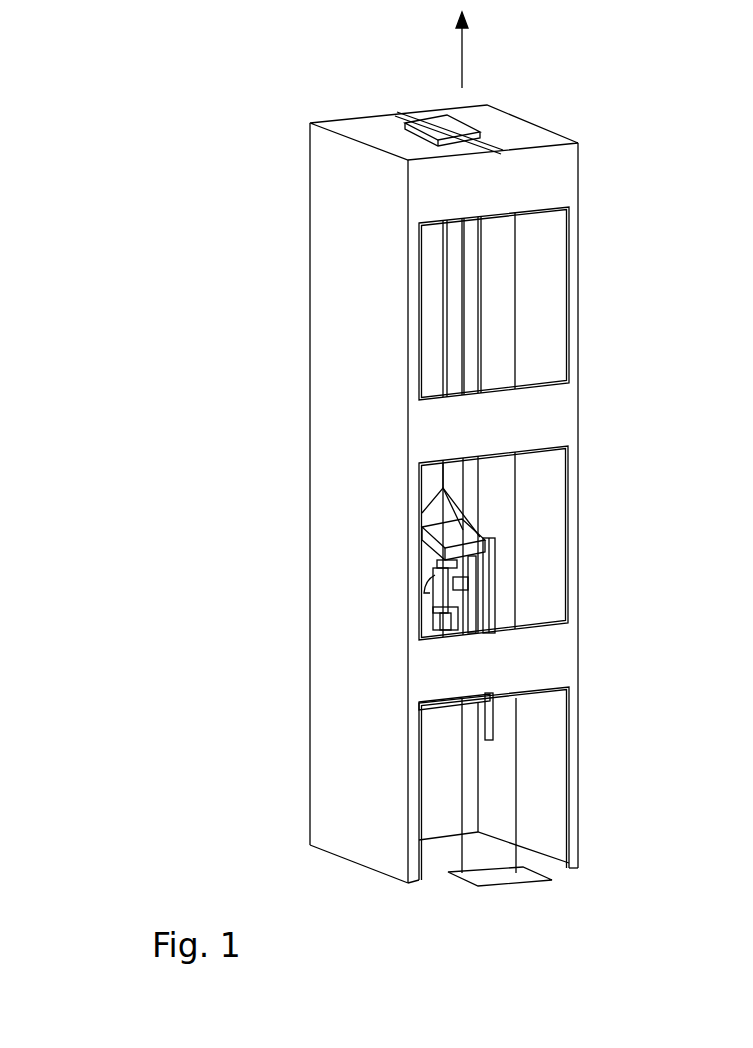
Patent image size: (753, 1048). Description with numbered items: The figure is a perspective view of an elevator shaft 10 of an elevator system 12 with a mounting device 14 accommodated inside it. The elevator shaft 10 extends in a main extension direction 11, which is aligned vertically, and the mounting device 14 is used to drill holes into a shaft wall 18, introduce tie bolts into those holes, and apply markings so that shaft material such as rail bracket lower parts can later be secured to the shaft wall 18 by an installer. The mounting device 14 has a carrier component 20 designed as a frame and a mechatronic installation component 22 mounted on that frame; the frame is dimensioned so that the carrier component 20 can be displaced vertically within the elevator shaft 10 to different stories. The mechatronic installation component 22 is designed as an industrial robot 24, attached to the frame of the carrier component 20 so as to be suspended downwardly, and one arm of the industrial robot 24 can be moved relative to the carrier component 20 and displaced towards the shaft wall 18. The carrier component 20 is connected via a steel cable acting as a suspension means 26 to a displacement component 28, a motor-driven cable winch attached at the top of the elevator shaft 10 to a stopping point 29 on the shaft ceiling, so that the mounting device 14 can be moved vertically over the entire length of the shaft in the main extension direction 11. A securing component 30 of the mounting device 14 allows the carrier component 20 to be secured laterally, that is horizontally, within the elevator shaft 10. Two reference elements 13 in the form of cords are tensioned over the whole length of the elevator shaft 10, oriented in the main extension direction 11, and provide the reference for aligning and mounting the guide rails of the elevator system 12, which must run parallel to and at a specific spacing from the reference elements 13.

The elevator shaft 10 is at (545, 507).
The main extension direction 11 is at (467, 35).
The elevator system 12 is at (600, 275).
The reference elements 13 is at (462, 850).
The mounting device 14 is at (508, 586).
The shaft wall 18 is at (552, 333).
The carrier component 20 is at (420, 552).
The mechatronic installation component 22 is at (420, 592).
The industrial robot 24 is at (420, 625).
The suspension means 26 is at (442, 335).
The displacement component 28 is at (436, 127).
The stopping point 29 is at (495, 135).
The securing component 30 is at (490, 718).